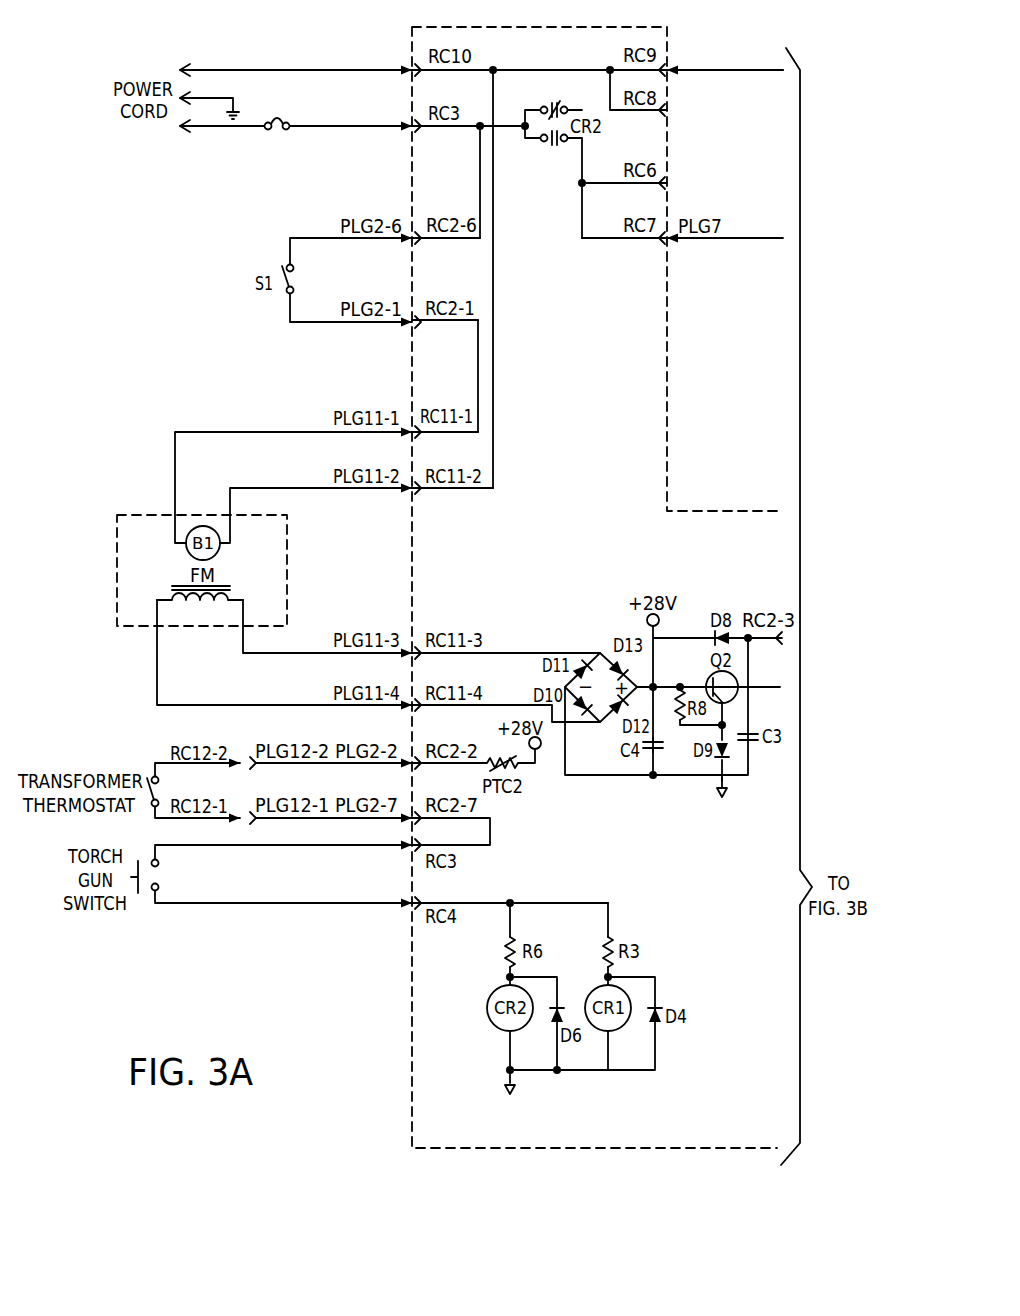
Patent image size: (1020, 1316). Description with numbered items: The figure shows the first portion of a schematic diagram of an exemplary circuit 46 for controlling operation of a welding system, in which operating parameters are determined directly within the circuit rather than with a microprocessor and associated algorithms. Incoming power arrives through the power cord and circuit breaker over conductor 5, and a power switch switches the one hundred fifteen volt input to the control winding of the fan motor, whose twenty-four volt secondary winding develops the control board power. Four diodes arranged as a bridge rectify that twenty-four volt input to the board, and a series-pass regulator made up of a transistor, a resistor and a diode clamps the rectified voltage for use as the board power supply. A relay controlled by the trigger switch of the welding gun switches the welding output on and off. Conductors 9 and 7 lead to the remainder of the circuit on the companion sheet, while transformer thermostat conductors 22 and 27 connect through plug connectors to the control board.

The circuit 46 is at (128, 252).
The power cord conductor 5 is at (300, 129).
The conductor to FIG. 3B 9 is at (725, 56).
The conductor PLG7 to FIG. 3B 7 is at (725, 228).
The thermostat conductor 22 is at (338, 772).
The thermostat conductor 27 is at (338, 827).